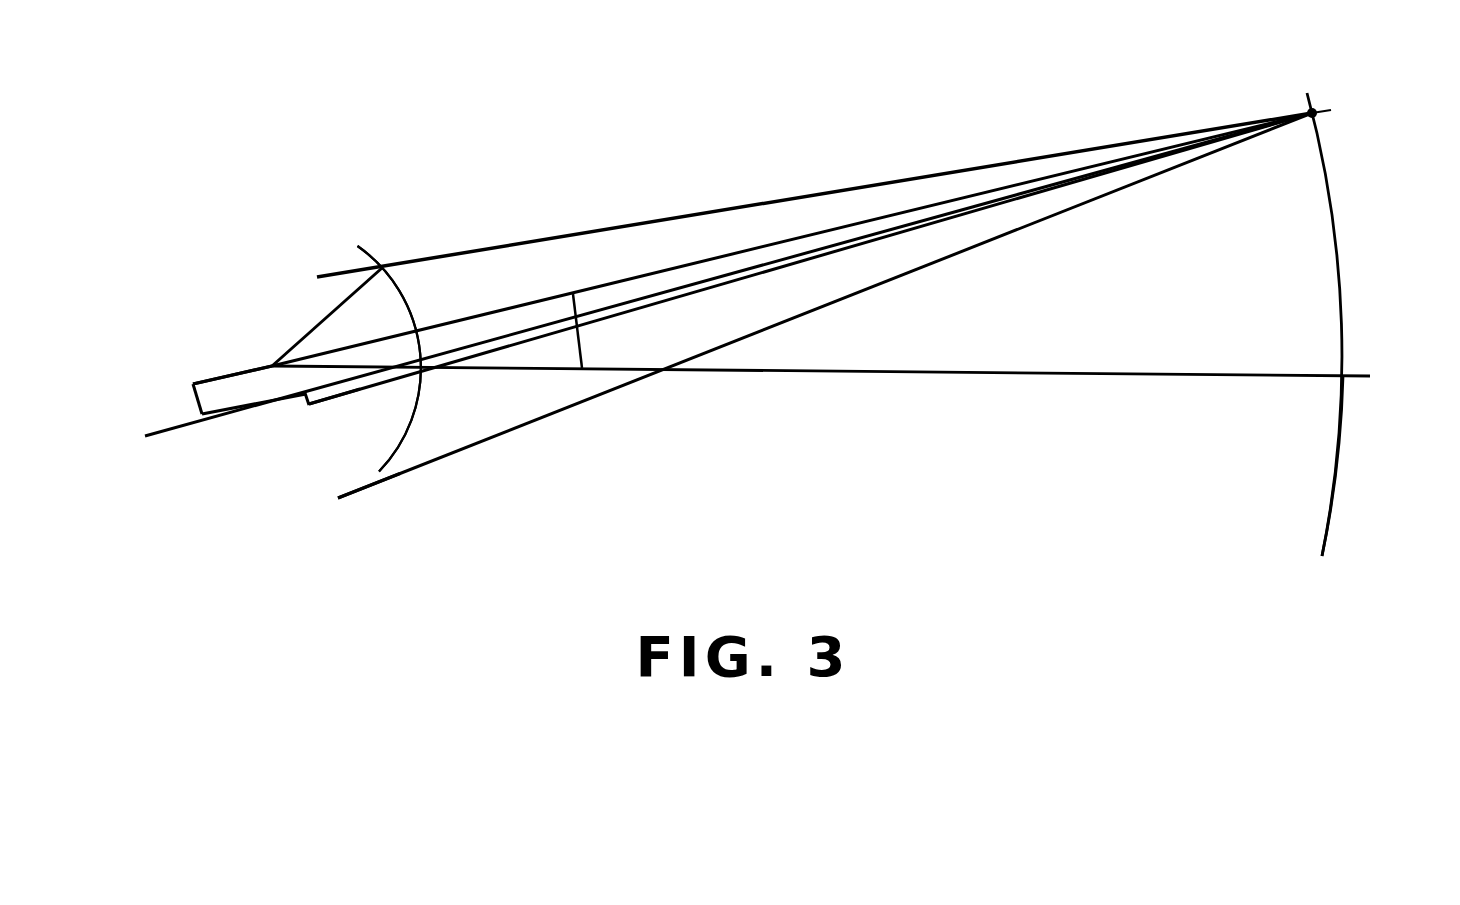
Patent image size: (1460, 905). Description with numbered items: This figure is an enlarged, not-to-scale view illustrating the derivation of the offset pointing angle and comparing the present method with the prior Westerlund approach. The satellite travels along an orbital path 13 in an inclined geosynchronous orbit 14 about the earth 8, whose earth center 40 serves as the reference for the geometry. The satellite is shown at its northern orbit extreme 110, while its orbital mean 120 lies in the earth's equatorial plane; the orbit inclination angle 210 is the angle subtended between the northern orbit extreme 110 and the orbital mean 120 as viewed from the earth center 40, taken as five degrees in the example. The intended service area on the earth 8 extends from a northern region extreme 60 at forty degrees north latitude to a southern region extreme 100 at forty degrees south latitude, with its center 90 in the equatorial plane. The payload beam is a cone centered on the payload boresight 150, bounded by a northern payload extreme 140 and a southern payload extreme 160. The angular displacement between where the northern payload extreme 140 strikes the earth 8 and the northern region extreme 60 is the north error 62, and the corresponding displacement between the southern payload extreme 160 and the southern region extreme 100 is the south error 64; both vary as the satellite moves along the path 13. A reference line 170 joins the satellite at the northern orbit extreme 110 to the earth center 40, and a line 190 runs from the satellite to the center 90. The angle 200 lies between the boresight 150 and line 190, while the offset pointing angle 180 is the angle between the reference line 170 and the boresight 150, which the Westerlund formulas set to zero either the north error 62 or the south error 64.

The earth 8 is at (379, 228).
The orbital path 13 is at (1335, 240).
The inclined geosynchronous orbit 14 is at (1333, 520).
The earth center 40 is at (268, 360).
The northern region extreme 60 is at (390, 272).
The north error 62 is at (382, 267).
The south error 64 is at (410, 469).
The center of the intended service area 90 is at (433, 373).
The southern region extreme 100 is at (383, 470).
The northern orbit extreme 110 is at (1327, 115).
The orbital mean 120 is at (1353, 378).
The northern payload extreme 140 is at (330, 272).
The payload boresight 150 is at (183, 426).
The southern payload extreme 160 is at (365, 486).
The reference line 170 is at (223, 373).
The offset pointing angle 180 is at (195, 398).
The line from the satellite to the center of the ISA 190 is at (320, 410).
The angle between boresight and line to ISA center 200 is at (300, 402).
The orbit inclination angle 210 is at (583, 342).